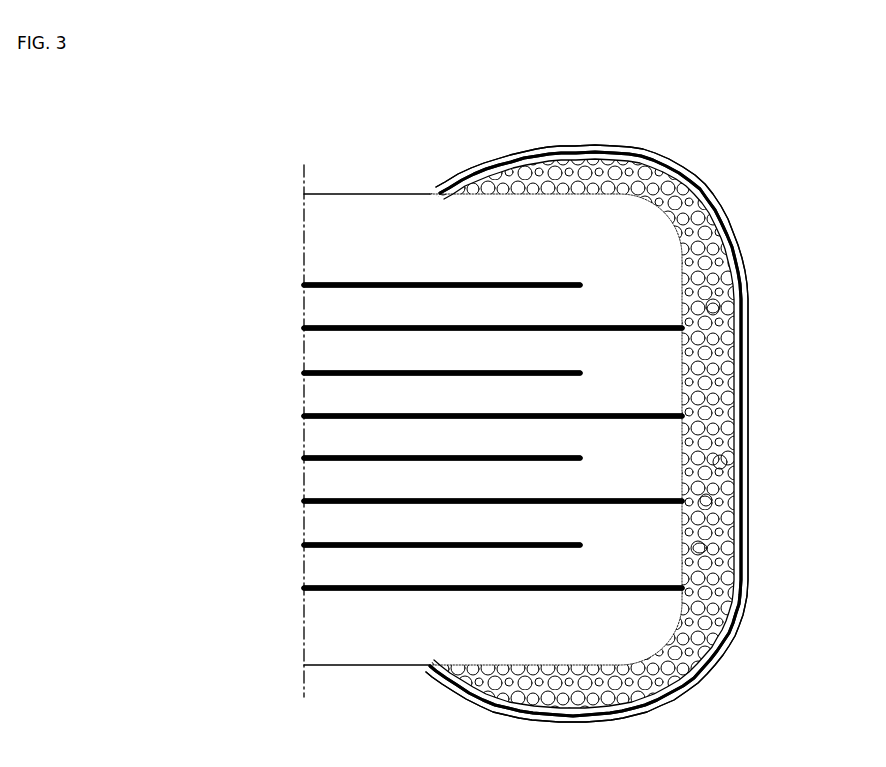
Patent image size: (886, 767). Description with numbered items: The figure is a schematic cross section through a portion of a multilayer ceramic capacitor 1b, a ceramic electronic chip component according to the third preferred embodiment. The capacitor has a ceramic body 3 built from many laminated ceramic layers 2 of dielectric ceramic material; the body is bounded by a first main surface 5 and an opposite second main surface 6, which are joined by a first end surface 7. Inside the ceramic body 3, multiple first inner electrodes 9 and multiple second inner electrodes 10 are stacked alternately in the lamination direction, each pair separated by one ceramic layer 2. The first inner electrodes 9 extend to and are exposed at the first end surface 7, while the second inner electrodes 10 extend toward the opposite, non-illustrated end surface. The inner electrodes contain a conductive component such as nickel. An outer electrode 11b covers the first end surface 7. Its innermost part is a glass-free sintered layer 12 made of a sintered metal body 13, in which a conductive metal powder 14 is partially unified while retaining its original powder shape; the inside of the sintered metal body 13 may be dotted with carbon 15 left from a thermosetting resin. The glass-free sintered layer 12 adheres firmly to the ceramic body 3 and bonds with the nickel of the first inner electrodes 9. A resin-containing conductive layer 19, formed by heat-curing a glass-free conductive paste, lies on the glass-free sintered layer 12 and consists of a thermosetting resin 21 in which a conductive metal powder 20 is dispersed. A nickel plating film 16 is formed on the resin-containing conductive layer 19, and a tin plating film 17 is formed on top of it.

The multilayer ceramic capacitor 1b is at (368, 99).
The ceramic layers 2 is at (303, 352).
The ceramic body 3 is at (303, 247).
The first main surface 5 is at (417, 193).
The second main surface 6 is at (365, 665).
The first end surface 7 is at (684, 446).
The first inner electrodes 9 is at (423, 500).
The second inner electrodes 10 is at (383, 373).
The outer electrode 11b is at (712, 192).
The glass-free sintered layer 12 is at (713, 306).
The sintered metal body 13 is at (716, 499).
The conductive metal powder 14 is at (700, 548).
The carbon 15 is at (686, 341).
The nickel plating film 16 is at (713, 638).
The tin plating film 17 is at (688, 683).
The resin-containing conductive layer 19 is at (740, 378).
The conductive metal powder 20 is at (720, 462).
The thermosetting resin 21 is at (730, 418).